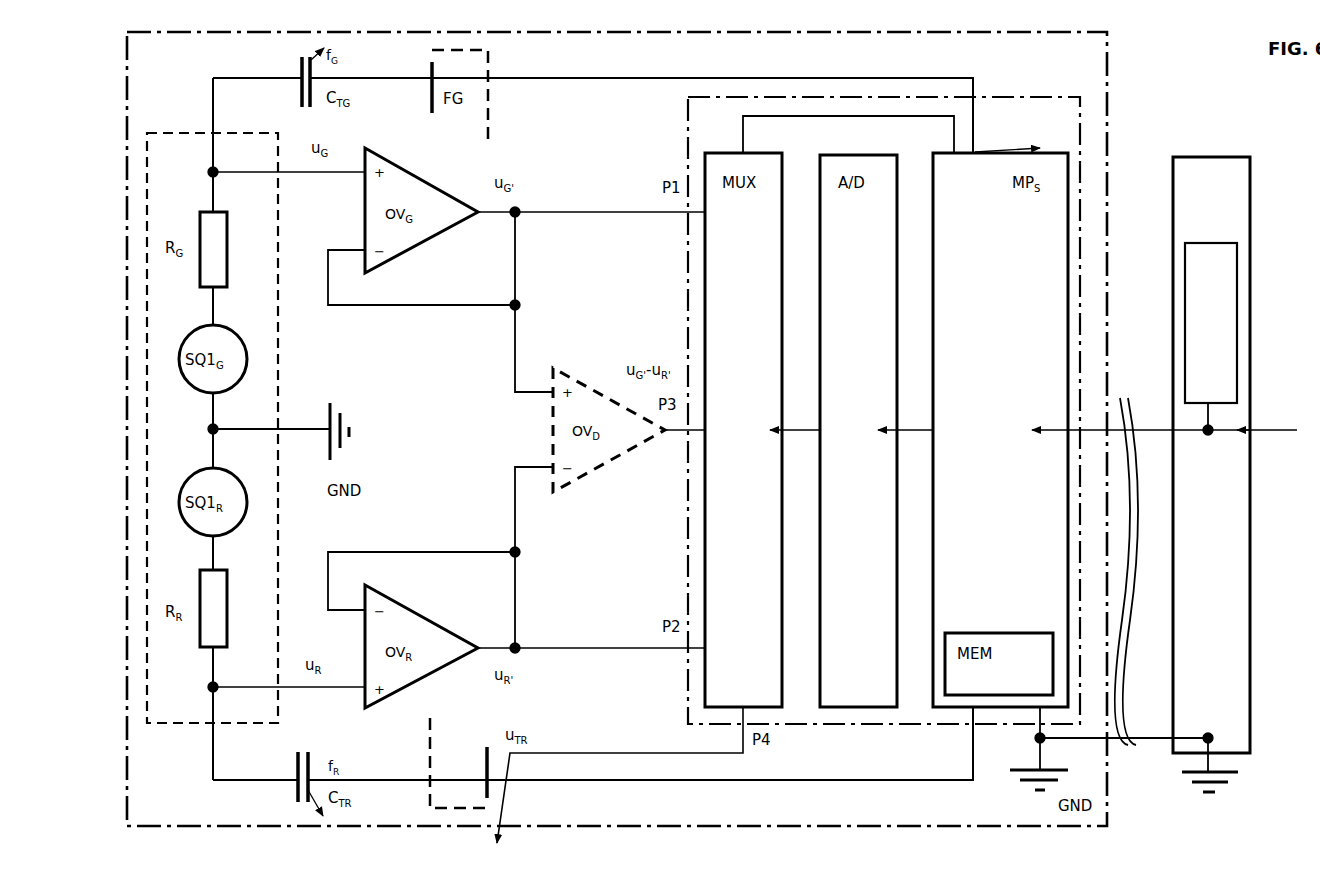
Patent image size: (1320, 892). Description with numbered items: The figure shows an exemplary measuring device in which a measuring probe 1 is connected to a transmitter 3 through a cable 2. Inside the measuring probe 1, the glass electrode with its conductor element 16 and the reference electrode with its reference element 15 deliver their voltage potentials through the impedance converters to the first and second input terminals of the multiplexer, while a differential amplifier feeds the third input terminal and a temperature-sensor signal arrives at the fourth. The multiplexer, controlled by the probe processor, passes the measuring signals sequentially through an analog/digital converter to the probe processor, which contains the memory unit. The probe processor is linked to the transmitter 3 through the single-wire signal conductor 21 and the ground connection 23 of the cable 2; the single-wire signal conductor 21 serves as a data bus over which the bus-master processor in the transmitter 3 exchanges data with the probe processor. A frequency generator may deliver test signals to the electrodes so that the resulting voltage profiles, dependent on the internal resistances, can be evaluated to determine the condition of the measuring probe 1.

The measuring probe 1 is at (1083, 66).
The cable 2 is at (1126, 557).
The transmitter 3 is at (1211, 455).
The reference element 15 is at (260, 681).
The conductor element 16 is at (257, 175).
The single-wire signal conductor 21 is at (1164, 415).
The ground connection 23 is at (1139, 752).